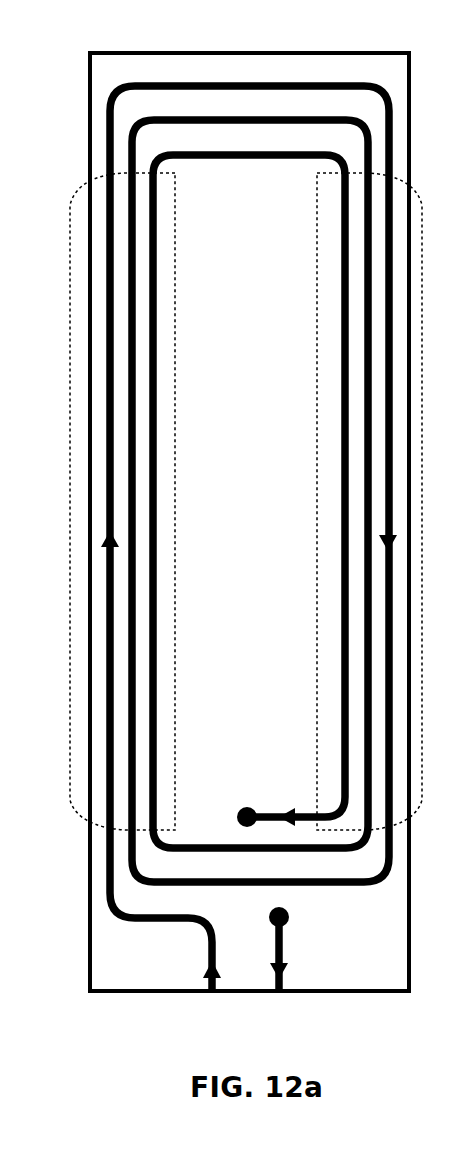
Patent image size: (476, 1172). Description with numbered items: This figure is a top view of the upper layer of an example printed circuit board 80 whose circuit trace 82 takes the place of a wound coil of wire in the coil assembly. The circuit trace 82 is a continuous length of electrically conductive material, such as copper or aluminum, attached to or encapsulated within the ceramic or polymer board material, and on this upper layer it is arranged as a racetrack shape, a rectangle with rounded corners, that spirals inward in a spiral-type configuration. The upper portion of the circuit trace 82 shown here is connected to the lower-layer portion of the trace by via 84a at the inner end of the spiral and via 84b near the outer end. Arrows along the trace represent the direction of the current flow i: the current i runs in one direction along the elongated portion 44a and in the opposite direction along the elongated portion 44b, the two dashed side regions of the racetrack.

The printed circuit board 80 is at (172, 52).
The circuit trace 82 is at (342, 305).
The elongated portion 44a is at (70, 450).
The elongated portion 44b is at (423, 450).
The via 84a is at (247, 807).
The via 84b is at (289, 917).
The current flow i is at (207, 970).